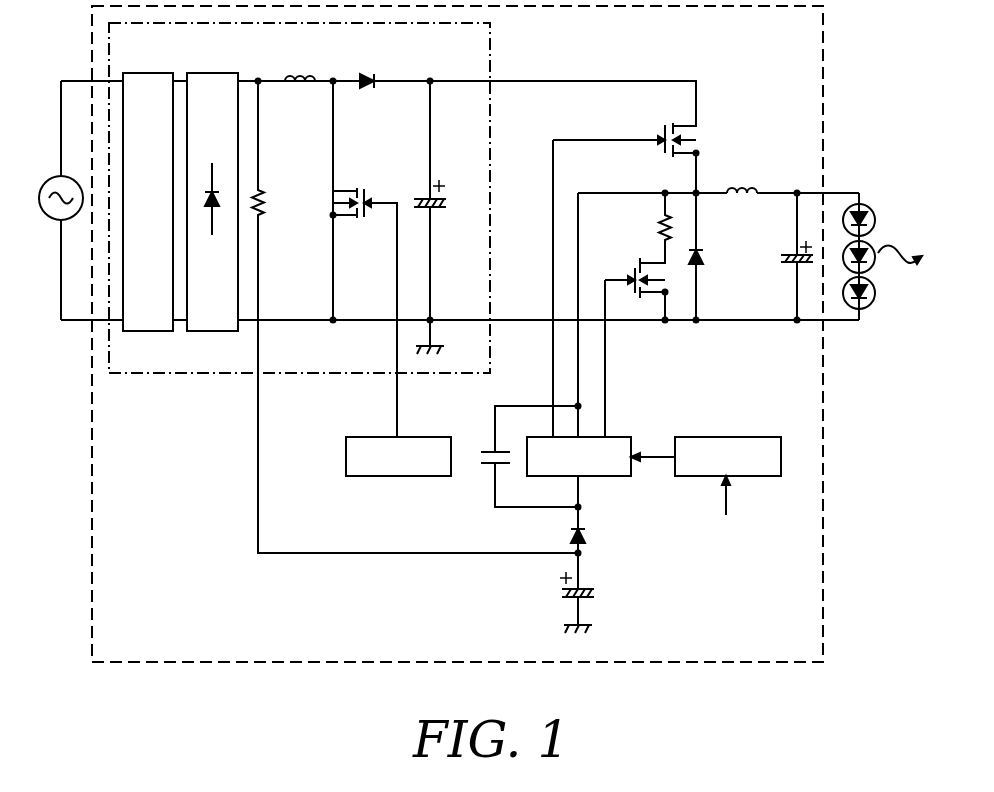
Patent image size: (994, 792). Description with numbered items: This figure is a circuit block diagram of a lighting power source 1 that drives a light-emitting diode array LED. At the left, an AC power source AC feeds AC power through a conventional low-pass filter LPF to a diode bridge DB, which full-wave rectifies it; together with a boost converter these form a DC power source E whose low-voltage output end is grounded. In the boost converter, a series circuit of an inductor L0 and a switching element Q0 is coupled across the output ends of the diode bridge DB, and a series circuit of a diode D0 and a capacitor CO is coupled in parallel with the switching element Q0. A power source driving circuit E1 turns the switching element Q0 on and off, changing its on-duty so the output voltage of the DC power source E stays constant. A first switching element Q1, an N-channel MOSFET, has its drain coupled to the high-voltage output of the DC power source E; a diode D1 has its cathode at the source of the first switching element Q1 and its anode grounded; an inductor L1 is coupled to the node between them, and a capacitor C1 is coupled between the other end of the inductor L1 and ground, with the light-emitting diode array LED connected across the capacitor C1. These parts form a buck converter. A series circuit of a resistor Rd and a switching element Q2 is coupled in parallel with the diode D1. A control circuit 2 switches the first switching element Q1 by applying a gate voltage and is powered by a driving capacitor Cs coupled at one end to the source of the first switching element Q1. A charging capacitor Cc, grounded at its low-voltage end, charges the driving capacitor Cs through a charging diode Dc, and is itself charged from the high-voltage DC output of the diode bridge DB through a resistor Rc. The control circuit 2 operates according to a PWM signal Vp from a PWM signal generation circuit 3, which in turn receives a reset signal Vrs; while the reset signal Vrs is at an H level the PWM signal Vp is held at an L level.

The lighting power source 1 is at (824, 68).
The control circuit 2 is at (599, 467).
The PWM signal generation circuit 3 is at (707, 441).
The DC power source E is at (170, 373).
The power source driving circuit E1 is at (400, 478).
The light-emitting diode array LED is at (862, 205).
The AC power source AC is at (55, 200).
The low-pass filter LPF is at (148, 186).
The diode bridge DB is at (212, 186).
The inductor L0 is at (299, 61).
The diode D0 is at (369, 64).
The switching element Q0 is at (365, 259).
The resistor Rc is at (415, 317).
The capacitor CO is at (449, 217).
The first switching element Q1 is at (624, 271).
The inductor L1 is at (742, 175).
The resistor Rd is at (647, 228).
The diode D1 is at (714, 256).
The capacitor C1 is at (787, 256).
The switching element Q2 is at (635, 347).
The driving capacitor Cs is at (519, 456).
The PWM signal Vp is at (653, 444).
The reset signal Vrs is at (724, 508).
The charging diode Dc is at (598, 530).
The charging capacitor Cc is at (593, 593).